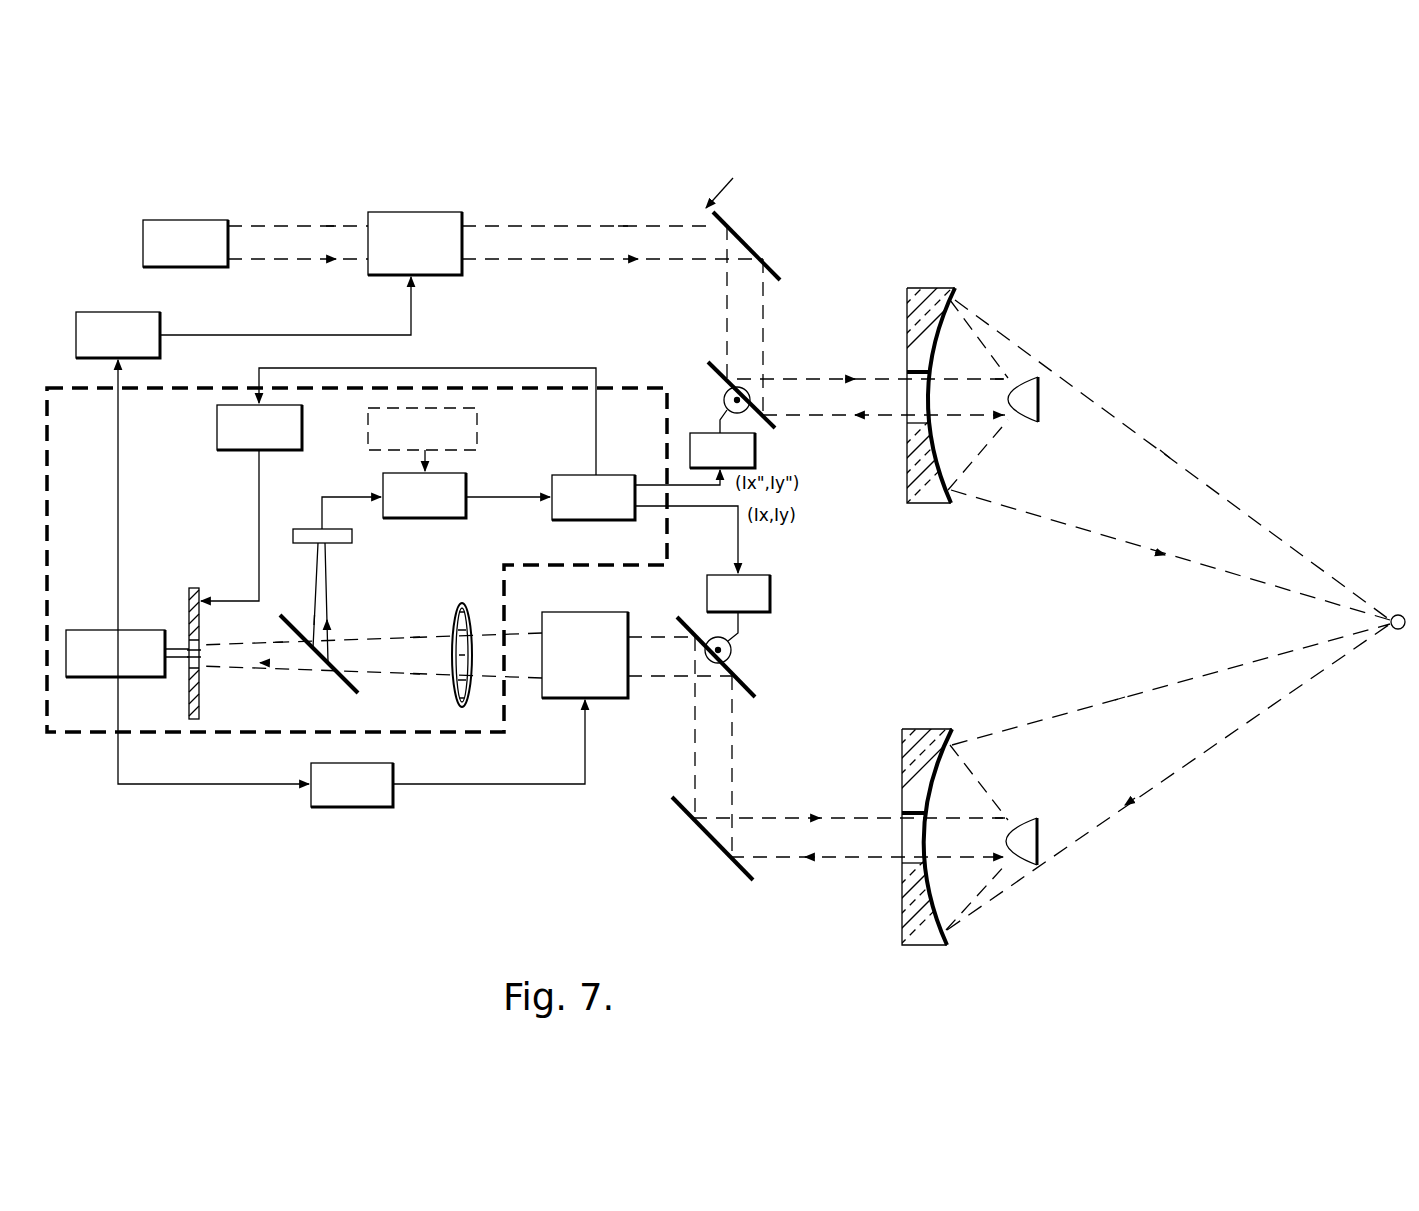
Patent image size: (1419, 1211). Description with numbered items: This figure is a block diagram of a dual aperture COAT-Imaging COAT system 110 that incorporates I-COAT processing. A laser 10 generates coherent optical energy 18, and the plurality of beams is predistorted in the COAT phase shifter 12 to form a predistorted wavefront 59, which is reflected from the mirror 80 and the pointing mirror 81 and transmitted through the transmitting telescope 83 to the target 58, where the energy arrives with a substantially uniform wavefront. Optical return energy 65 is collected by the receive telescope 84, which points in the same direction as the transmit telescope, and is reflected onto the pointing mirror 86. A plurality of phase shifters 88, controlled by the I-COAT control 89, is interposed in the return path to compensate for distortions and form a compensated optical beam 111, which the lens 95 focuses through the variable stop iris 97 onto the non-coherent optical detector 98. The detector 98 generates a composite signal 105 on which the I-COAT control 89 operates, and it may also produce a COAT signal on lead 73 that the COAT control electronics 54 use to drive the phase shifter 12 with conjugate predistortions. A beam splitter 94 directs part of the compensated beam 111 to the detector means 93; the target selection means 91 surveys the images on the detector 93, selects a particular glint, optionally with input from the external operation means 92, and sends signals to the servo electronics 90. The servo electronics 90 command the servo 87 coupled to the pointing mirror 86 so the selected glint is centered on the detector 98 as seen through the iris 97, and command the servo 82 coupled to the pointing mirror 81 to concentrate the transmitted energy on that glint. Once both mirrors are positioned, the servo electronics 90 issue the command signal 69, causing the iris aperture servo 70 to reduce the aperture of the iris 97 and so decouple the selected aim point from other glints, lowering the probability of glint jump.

The laser 10 is at (229, 220).
The COAT phase shifter 12 is at (458, 212).
The coherent optical energy 18 is at (323, 260).
The COAT control electronics 54 is at (160, 313).
The target 58 is at (1395, 615).
The predistorted wavefront 59 is at (607, 263).
The optical return energy 65 is at (840, 857).
The command signal 69 is at (428, 404).
The iris aperture servo 70 is at (302, 425).
The lead 73 is at (116, 537).
The mirror 80 is at (727, 224).
The pointing mirror 81 is at (716, 365).
The servo 82 is at (697, 433).
The transmitting telescope 83 is at (953, 290).
The receive telescope 84 is at (932, 945).
The pointing mirror 86 is at (732, 660).
The servo 87 is at (770, 612).
The phase shifters 88 is at (628, 700).
The I-COAT control 89 is at (393, 807).
The servo electronics 90 is at (554, 476).
The target selection means 91 is at (466, 518).
The external operation means 92 is at (477, 443).
The detector means 93 is at (352, 541).
The beam splitter 94 is at (352, 690).
The lens 95 is at (462, 702).
The variable stop iris 97 is at (189, 590).
The non-coherent optical detector 98 is at (143, 677).
The composite signal 105 is at (217, 784).
The COAT-Imaging COAT system 110 is at (733, 180).
The compensated optical beam 111 is at (508, 630).